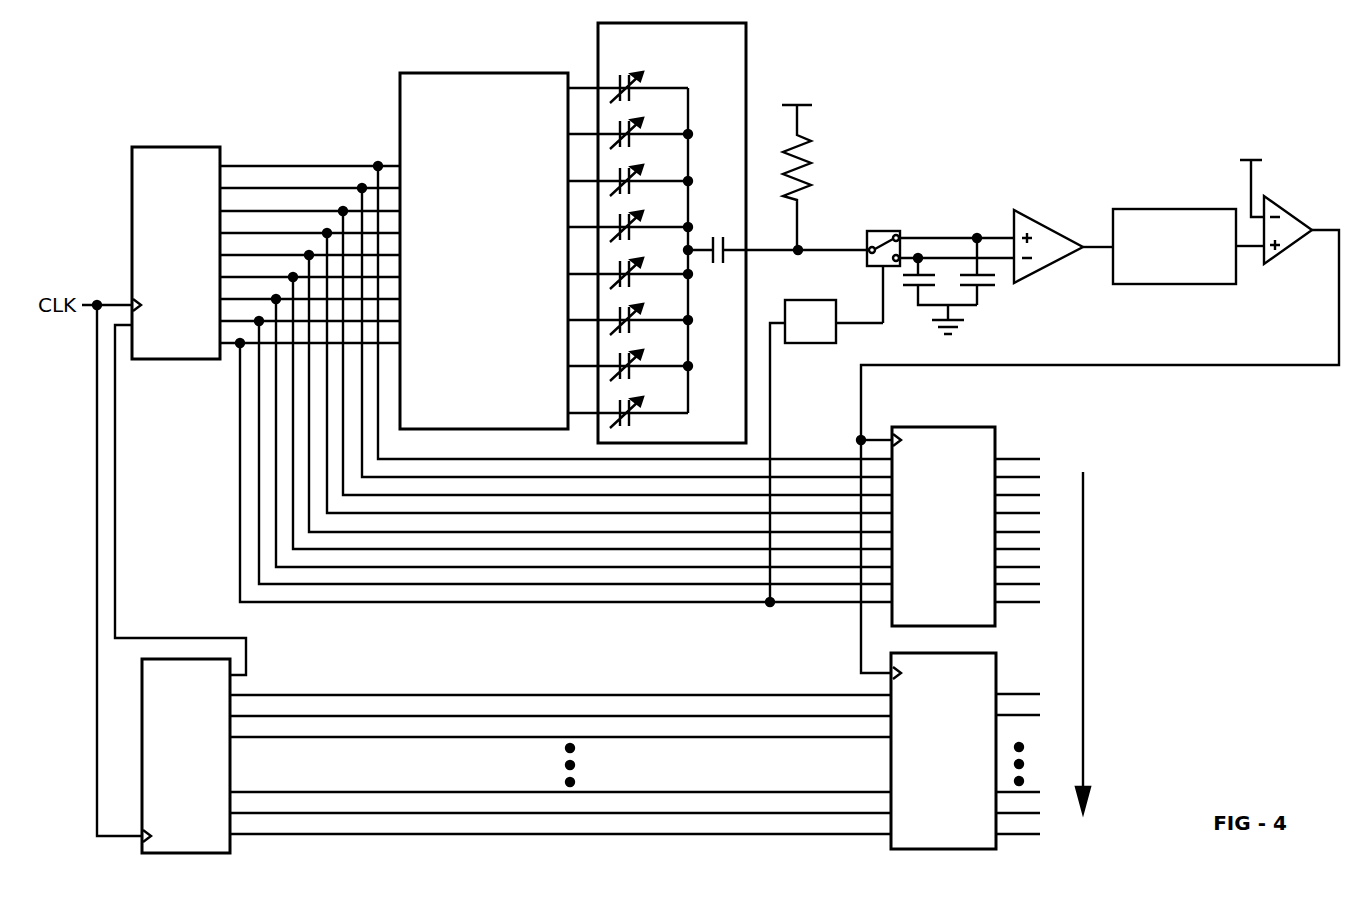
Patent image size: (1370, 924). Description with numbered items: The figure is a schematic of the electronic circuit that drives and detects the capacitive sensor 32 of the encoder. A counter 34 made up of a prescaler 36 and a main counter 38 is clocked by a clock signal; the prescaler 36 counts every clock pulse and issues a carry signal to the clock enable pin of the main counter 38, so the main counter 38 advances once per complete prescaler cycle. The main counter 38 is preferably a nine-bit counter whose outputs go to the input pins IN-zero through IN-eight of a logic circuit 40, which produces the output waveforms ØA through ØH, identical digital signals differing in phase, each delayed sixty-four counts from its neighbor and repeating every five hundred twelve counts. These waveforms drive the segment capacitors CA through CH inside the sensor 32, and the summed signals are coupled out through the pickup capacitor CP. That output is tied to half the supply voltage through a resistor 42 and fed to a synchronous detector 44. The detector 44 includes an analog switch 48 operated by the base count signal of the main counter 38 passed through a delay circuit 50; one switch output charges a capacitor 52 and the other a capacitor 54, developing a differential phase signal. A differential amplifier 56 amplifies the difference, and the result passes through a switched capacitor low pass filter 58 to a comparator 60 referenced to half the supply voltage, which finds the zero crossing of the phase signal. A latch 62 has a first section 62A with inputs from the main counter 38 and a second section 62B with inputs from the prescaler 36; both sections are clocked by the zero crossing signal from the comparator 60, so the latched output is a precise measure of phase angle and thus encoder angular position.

The sensor 32 is at (746, 56).
The counter 34 is at (100, 226).
The prescaler 36 is at (183, 659).
The main counter 38 is at (173, 147).
The logic circuit 40 is at (400, 123).
The resistor 42 is at (812, 180).
The synchronous detector 44 is at (965, 125).
The analog switch 48 is at (883, 231).
The delay circuit 50 is at (808, 343).
The capacitor 52 is at (903, 286).
The capacitor 54 is at (988, 286).
The differential amplifier 56 is at (1043, 220).
The switched capacitor low pass filter 58 is at (1162, 209).
The comparator 60 is at (1290, 210).
The latch 62 is at (963, 616).
The first section 62A is at (968, 427).
The second section 62B is at (891, 767).